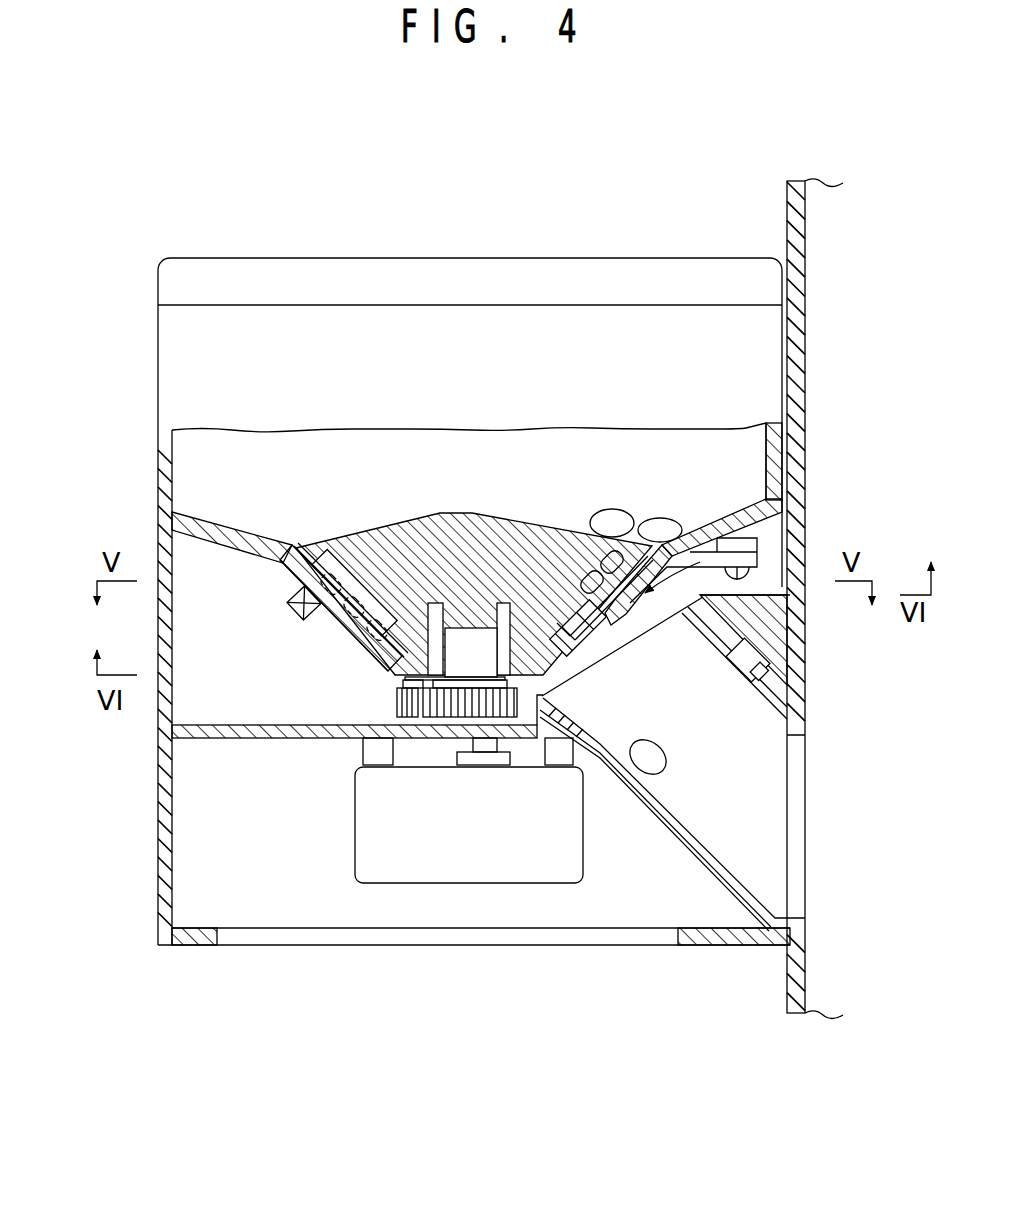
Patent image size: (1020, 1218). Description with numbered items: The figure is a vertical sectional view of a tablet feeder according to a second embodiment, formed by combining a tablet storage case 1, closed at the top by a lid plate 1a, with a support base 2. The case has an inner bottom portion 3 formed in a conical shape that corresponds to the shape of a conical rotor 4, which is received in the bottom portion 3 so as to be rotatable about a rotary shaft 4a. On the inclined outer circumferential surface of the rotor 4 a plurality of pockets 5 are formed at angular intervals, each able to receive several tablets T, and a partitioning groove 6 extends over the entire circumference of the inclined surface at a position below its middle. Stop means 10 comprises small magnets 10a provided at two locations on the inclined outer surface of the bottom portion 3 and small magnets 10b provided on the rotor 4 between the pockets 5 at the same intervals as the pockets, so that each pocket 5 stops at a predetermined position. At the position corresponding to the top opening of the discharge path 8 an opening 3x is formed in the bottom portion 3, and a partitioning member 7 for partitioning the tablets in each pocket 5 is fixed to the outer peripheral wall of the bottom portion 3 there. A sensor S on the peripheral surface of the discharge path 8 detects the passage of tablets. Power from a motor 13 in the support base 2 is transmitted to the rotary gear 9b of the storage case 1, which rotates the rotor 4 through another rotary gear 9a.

The tablet storage case 1 is at (154, 441).
The lid plate 1a is at (509, 266).
The support base 2 is at (152, 832).
The bottom portion 3 is at (341, 620).
The opening 3x is at (600, 657).
The rotor 4 is at (510, 522).
The rotary shaft 4a is at (464, 640).
The pockets 5 is at (312, 552).
The partitioning groove 6 is at (367, 628).
The partitioning member 7 is at (690, 553).
The discharge path 8 is at (780, 822).
The rotary gear 9a is at (458, 707).
The rotary gear 9b is at (395, 703).
The stop means 10 is at (215, 585).
The small magnets 10a is at (293, 610).
The small magnets 10b is at (293, 567).
The motor 13 is at (455, 872).
The sensor S is at (753, 675).
The tablets T is at (397, 620).